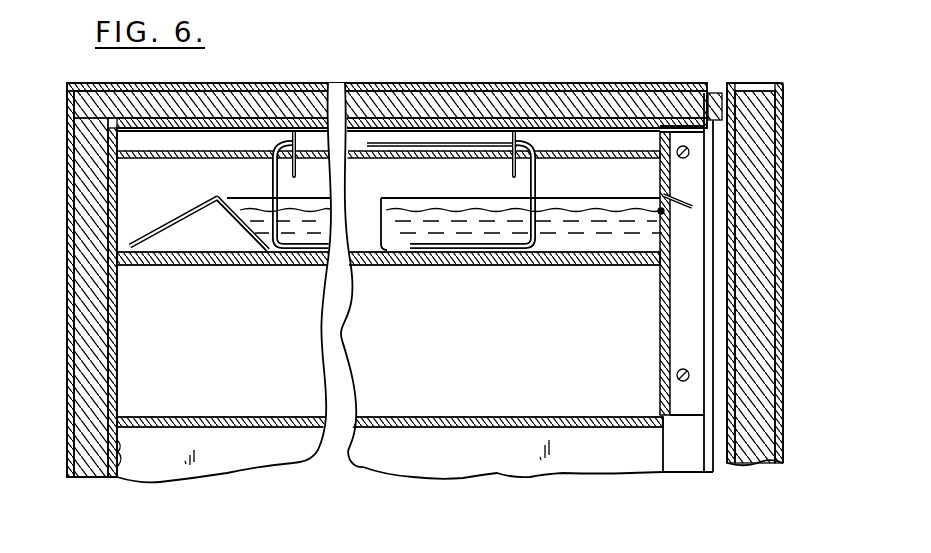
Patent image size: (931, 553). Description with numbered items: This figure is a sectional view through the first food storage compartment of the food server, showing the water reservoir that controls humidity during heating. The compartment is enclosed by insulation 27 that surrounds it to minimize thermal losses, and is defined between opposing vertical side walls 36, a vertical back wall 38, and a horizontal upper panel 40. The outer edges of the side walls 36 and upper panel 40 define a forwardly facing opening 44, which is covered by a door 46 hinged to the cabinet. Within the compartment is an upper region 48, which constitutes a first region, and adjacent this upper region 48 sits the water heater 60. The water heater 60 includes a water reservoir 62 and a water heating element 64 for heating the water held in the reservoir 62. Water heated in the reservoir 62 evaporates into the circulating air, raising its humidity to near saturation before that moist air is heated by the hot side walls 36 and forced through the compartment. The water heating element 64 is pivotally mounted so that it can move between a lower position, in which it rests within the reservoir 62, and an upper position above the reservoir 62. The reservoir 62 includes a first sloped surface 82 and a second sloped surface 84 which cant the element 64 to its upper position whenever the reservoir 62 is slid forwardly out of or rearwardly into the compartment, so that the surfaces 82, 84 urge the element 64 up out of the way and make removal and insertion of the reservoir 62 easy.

The insulation 27 is at (370, 82).
The side walls 36 is at (300, 462).
The back wall 38 is at (120, 479).
The upper panel 40 is at (392, 414).
The opening 44 is at (697, 437).
The door 46 is at (785, 340).
The upper region 48 is at (578, 458).
The water heater 60 is at (572, 146).
The water reservoir 62 is at (528, 266).
The water heating element 64 is at (538, 185).
The first sloped surface 82 is at (226, 246).
The second sloped surface 84 is at (172, 222).